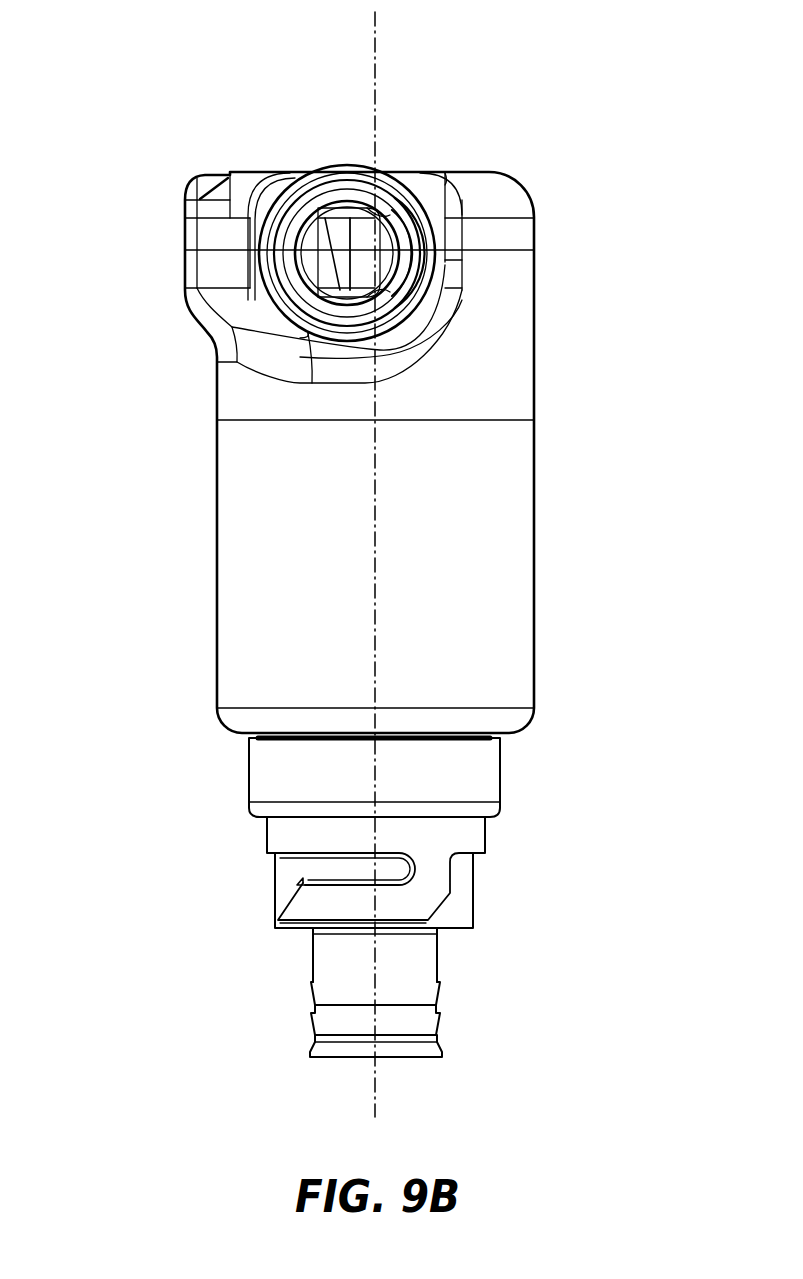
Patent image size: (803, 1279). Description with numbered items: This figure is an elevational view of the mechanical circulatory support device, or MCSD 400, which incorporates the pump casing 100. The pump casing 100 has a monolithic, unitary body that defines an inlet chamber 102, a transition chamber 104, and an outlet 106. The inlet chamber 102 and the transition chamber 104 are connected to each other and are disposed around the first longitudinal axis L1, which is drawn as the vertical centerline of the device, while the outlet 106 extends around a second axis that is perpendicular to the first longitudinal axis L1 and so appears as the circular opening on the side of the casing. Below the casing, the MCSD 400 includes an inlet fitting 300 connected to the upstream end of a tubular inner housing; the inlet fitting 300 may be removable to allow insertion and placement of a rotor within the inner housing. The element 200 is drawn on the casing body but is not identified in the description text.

The pump casing 100 is at (490, 123).
The inlet chamber 102 is at (488, 305).
The transition chamber 104 is at (507, 234).
The outlet 106 is at (327, 193).
The housing body 200 is at (470, 494).
The inlet fitting 300 is at (467, 836).
The MCSD 400 is at (186, 415).
The first longitudinal axis L1 is at (375, 1097).